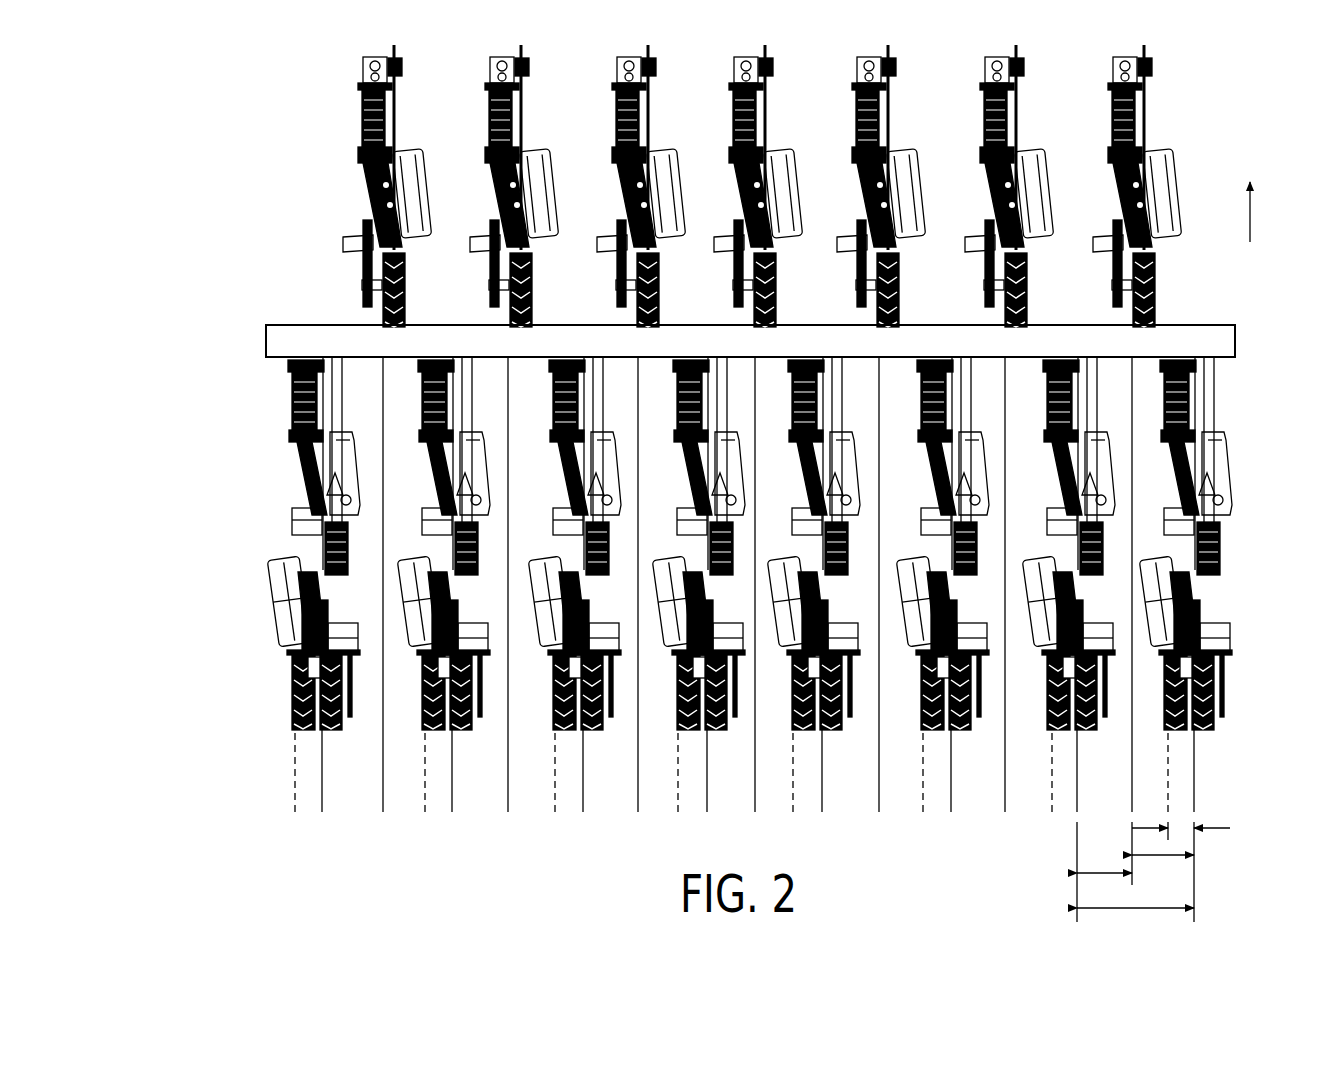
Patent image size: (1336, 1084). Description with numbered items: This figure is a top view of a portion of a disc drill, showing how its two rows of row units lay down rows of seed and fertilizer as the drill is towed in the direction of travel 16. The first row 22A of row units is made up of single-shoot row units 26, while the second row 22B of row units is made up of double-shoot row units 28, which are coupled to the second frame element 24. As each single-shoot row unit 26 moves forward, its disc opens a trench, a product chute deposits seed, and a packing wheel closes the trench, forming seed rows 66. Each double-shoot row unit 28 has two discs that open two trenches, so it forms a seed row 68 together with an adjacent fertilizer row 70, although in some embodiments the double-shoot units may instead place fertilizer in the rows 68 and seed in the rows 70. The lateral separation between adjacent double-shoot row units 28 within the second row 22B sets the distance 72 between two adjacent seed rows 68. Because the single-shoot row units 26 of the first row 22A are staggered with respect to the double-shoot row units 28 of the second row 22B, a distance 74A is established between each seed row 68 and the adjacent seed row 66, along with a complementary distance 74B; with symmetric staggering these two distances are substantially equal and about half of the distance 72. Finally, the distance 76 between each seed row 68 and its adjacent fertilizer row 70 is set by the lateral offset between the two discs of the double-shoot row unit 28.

The direction of travel 16 is at (1252, 220).
The first row of row units 22A is at (257, 210).
The second row of row units 22B is at (212, 653).
The second frame element 24 is at (267, 335).
The single-shoot row unit 26 is at (338, 132).
The double-shoot row unit 28 is at (300, 458).
The seed row 66 is at (384, 375).
The seed row 68 is at (322, 778).
The fertilizer row 70 is at (294, 770).
The distance between adjacent seed rows 72 is at (1135, 912).
The distance between seed row and adjacent seed row 74A is at (1103, 873).
The complementary distance 74B is at (1162, 856).
The distance between seed row and adjacent fertilizer row 76 is at (1218, 828).